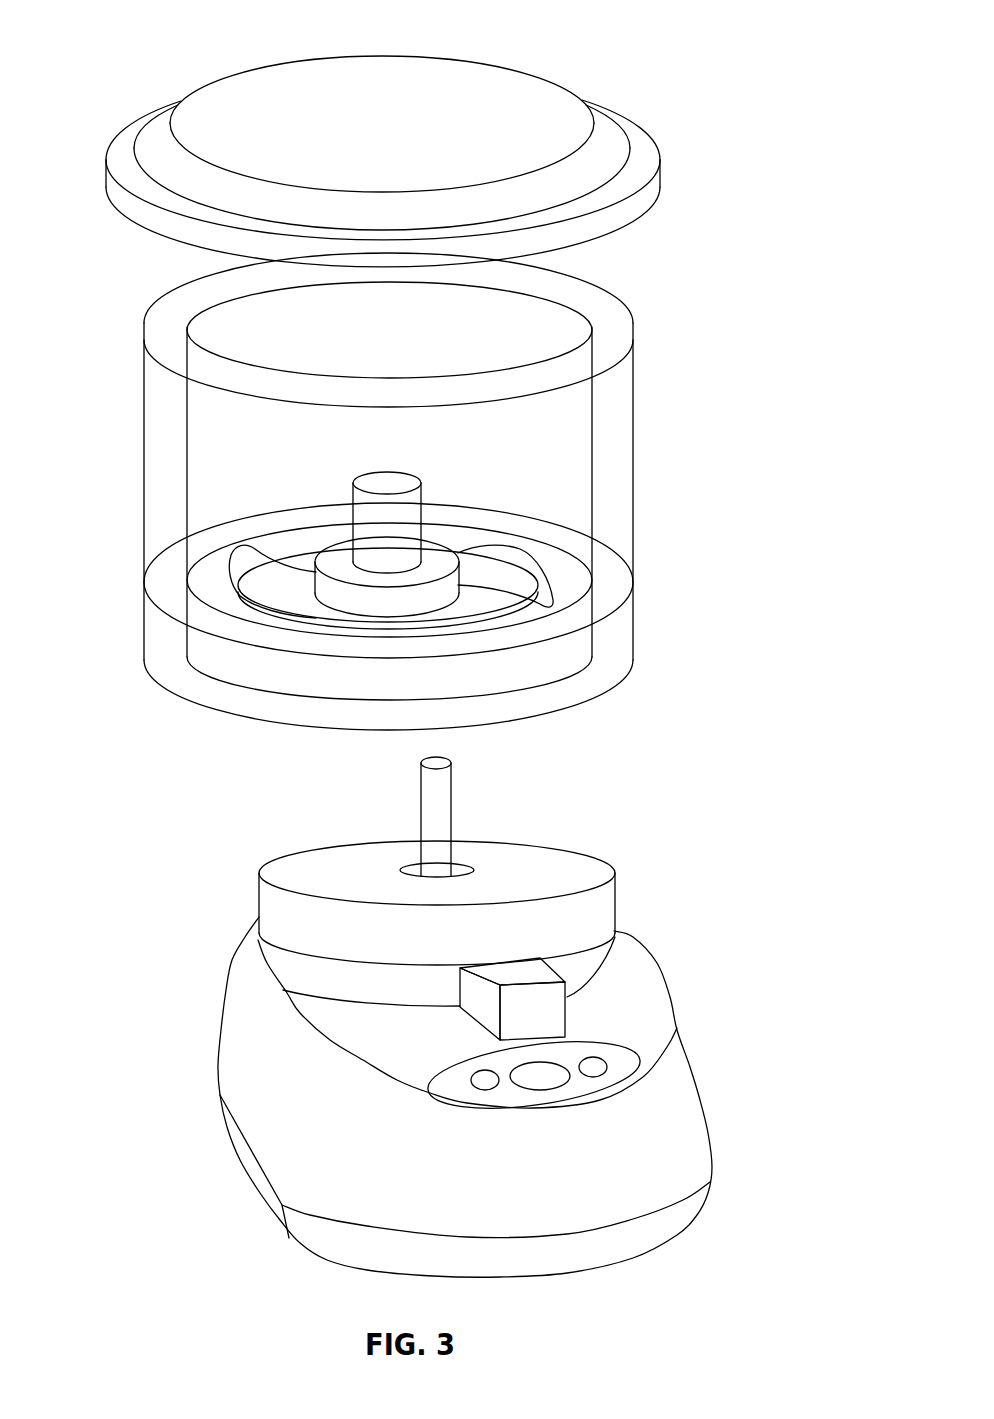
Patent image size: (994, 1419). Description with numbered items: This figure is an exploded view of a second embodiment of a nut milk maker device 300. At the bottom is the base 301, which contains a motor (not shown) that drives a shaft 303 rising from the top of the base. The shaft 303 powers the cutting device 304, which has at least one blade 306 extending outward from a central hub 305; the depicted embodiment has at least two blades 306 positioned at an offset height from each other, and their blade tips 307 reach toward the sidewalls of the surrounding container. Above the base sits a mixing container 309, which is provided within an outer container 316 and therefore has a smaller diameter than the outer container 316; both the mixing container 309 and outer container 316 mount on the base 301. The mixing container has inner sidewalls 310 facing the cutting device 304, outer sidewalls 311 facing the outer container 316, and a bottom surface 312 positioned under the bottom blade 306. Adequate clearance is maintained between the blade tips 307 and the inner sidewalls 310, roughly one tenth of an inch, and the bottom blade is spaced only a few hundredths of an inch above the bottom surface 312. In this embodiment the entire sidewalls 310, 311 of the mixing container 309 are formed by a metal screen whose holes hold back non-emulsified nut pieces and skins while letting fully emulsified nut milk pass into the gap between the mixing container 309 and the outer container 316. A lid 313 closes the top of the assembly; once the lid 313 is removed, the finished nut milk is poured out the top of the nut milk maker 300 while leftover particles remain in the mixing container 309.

The nut milk maker device 300 is at (754, 26).
The base 301 is at (653, 1003).
The shaft 303 is at (433, 810).
The cutting device 304 is at (522, 492).
The central hub 305 is at (365, 530).
The blade 306 is at (282, 600).
The blade tips 307 is at (224, 545).
The mixing container 309 is at (590, 315).
The inner sidewalls 310 is at (223, 330).
The outer sidewalls 311 is at (213, 373).
The bottom surface 312 is at (480, 608).
The lid 313 is at (562, 130).
The outer container 316 is at (634, 552).